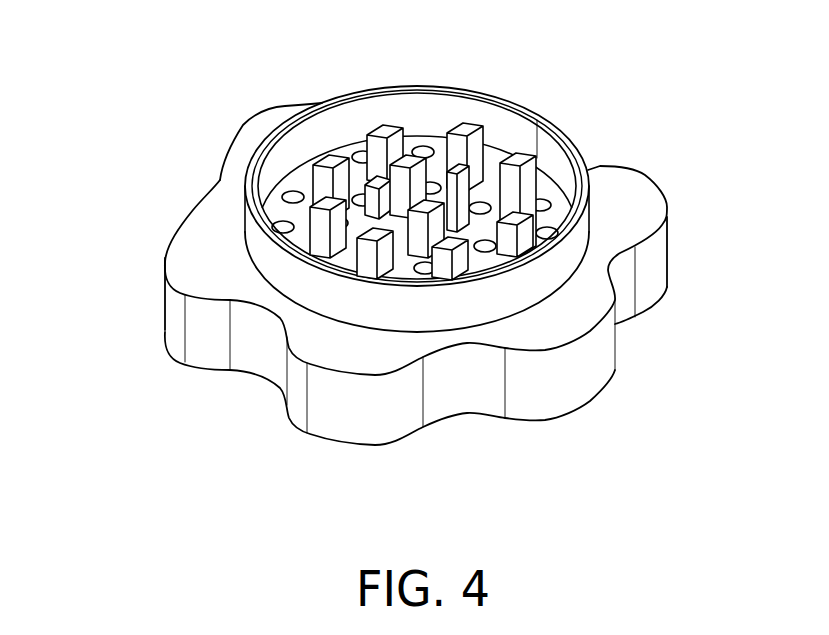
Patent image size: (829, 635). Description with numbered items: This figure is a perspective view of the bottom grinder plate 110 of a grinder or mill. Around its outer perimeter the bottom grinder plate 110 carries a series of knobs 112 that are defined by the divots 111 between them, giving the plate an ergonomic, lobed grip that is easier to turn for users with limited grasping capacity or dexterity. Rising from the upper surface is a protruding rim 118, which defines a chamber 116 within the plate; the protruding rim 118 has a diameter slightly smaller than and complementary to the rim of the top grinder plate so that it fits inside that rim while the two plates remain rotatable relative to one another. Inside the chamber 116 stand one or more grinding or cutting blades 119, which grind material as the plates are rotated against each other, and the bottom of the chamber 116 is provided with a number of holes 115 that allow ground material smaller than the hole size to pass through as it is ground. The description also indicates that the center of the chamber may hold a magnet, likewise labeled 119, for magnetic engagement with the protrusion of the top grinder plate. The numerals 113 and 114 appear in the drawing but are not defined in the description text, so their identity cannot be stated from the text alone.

The bottom grinder plate 110 is at (167, 290).
The divots 111 is at (267, 347).
The knobs 112 is at (348, 405).
The bottom edge 113 is at (447, 423).
The projection 114 is at (317, 233).
The holes 115 is at (541, 203).
The chamber 116 is at (489, 187).
The protruding rim 118 is at (550, 265).
The grinding or cutting blades 119 is at (403, 228).